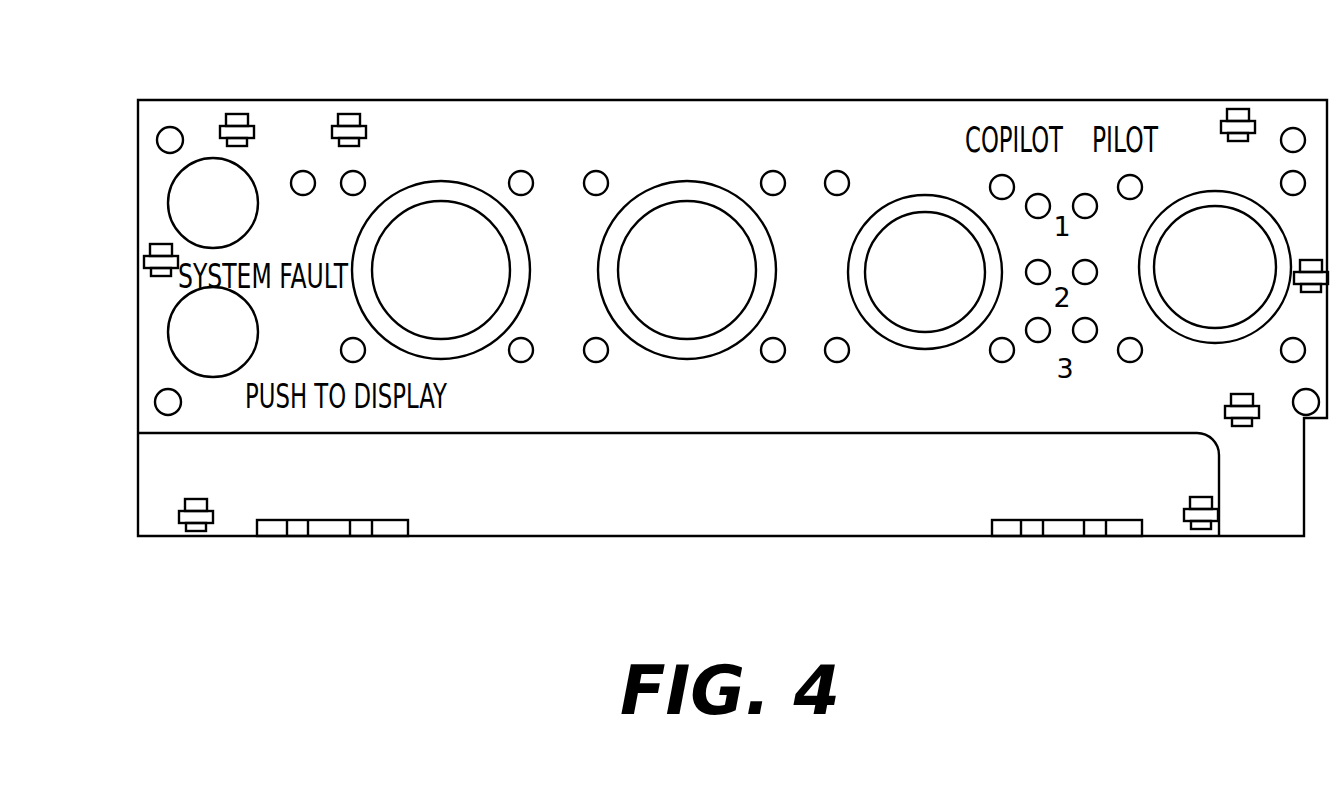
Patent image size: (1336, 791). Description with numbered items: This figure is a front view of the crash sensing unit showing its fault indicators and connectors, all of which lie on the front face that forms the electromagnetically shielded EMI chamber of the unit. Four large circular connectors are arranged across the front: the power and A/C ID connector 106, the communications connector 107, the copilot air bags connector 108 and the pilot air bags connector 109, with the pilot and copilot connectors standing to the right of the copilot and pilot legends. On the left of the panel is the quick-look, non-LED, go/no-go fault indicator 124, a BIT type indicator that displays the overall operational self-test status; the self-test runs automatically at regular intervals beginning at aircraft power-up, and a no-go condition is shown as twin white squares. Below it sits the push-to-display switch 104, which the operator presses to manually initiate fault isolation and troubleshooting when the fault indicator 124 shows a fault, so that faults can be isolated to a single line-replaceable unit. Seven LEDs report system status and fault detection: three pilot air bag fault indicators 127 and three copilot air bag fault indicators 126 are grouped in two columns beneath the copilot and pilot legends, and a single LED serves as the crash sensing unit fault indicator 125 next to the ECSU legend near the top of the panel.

The push-to-display switch 104 is at (170, 323).
The power and A/C ID connector 106 is at (472, 333).
The communications connector 107 is at (710, 337).
The copilot air bags connector 108 is at (896, 330).
The pilot air bags connector 109 is at (1232, 342).
The quick-look fault indicator 124 is at (170, 203).
The crash sensing unit fault indicator 125 is at (294, 115).
The copilot air bag fault indicators 126 is at (1063, 215).
The pilot air bag fault indicators 127 is at (1063, 215).